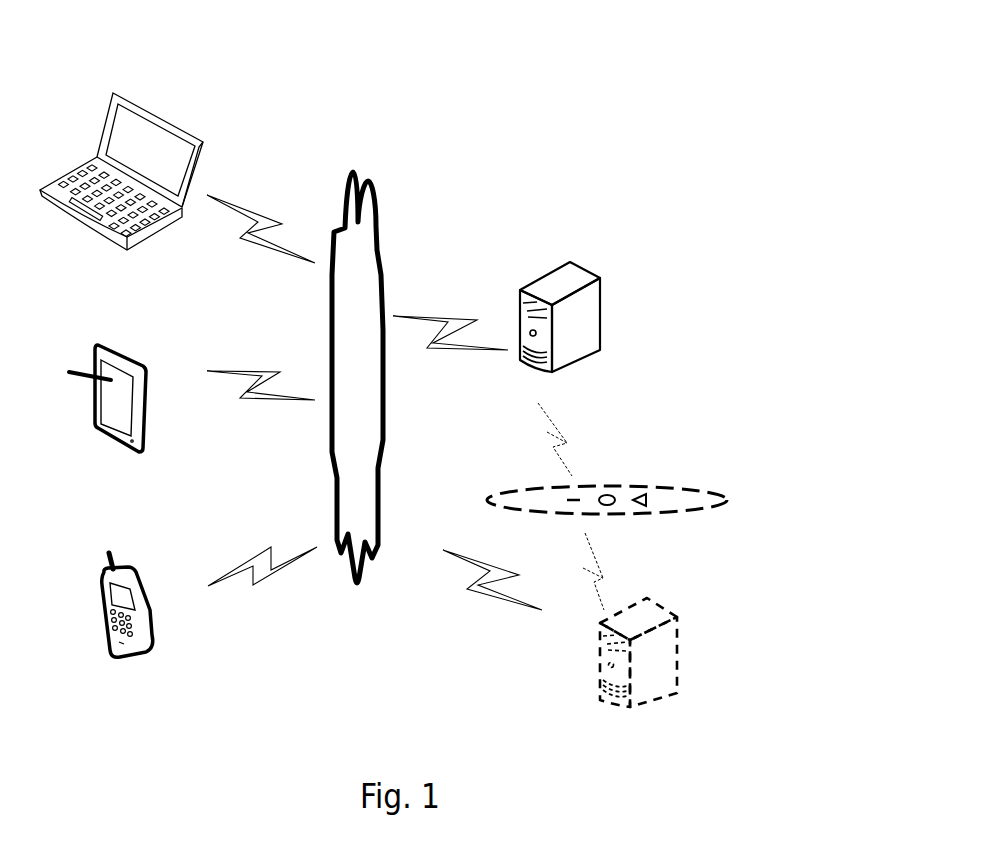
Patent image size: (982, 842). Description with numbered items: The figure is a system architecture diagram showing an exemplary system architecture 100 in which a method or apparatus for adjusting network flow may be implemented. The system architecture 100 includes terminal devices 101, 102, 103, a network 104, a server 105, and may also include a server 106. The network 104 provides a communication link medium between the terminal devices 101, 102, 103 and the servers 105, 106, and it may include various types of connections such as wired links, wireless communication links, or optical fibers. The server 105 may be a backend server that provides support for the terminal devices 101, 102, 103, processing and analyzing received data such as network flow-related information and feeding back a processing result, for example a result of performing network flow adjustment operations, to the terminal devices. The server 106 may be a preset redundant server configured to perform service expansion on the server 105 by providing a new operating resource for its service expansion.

The system architecture 100 is at (620, 120).
The terminal device 101 is at (127, 625).
The terminal device 102 is at (107, 416).
The terminal device 103 is at (121, 190).
The network 104 is at (357, 377).
The server 105 is at (560, 332).
The server 106 is at (638, 668).